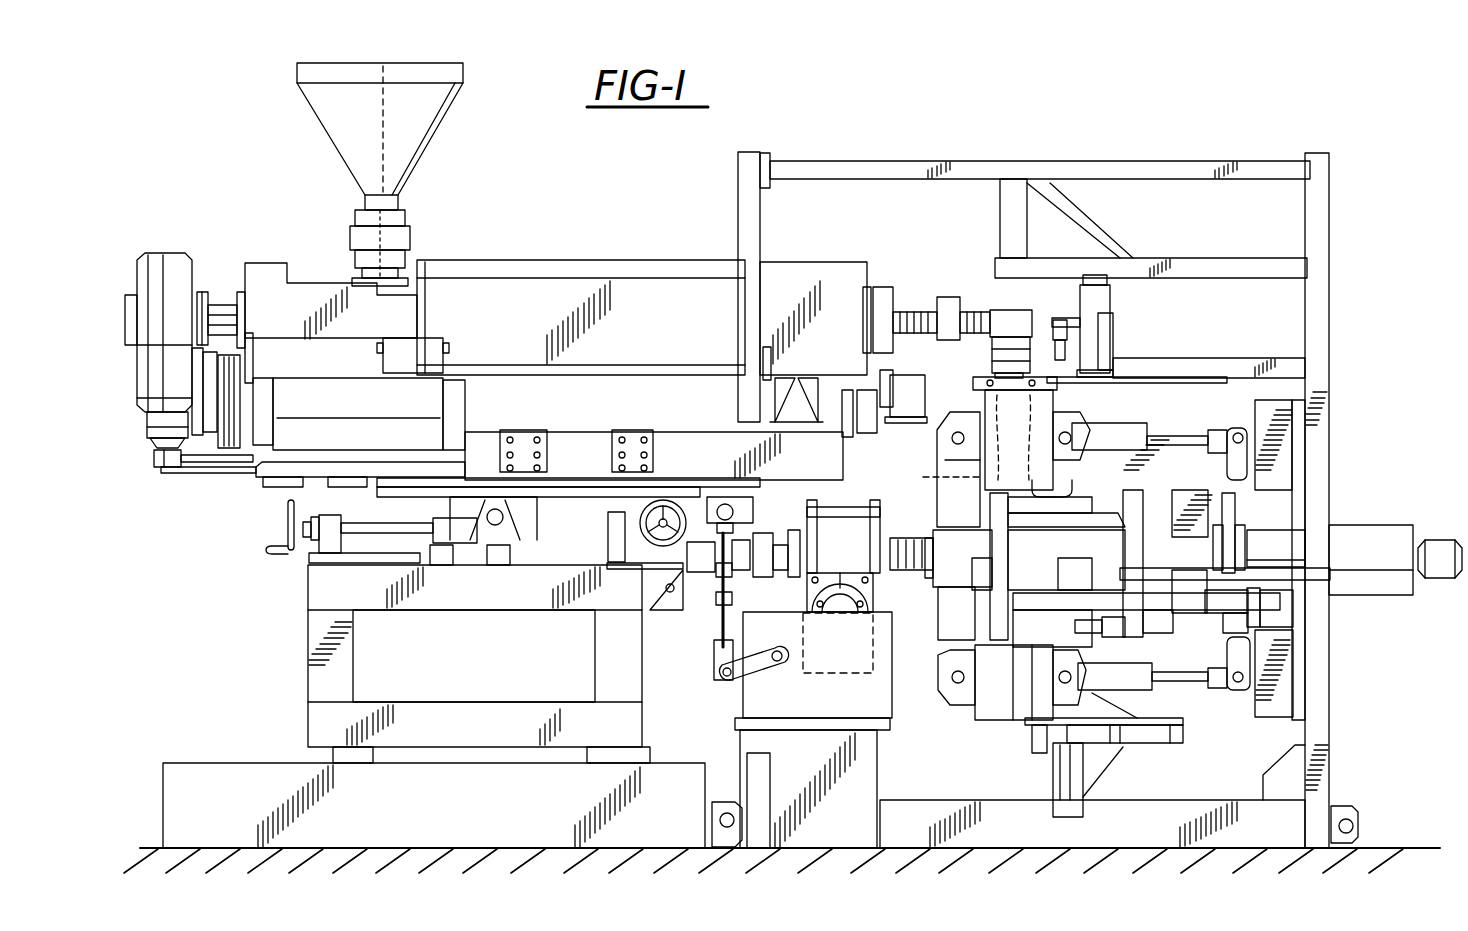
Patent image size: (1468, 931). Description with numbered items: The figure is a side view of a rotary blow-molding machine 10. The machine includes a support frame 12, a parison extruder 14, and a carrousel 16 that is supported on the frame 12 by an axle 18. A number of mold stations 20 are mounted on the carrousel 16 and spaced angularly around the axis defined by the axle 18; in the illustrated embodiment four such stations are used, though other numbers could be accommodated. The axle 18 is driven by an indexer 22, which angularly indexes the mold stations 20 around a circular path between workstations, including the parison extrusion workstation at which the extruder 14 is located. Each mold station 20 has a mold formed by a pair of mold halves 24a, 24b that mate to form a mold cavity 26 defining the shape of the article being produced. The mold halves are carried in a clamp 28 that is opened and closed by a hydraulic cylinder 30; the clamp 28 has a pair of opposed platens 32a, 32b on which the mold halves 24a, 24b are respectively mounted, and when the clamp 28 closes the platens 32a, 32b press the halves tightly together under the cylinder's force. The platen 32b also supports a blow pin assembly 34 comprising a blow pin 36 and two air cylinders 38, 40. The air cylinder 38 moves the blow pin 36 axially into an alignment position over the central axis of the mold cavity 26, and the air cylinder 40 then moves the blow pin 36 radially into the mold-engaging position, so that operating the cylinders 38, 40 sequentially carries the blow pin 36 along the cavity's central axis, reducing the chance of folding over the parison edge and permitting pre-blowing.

The rotary blow-molding machine 10 is at (1310, 142).
The support frame 12 is at (1328, 780).
The parison extruder 14 is at (816, 262).
The carrousel 16 is at (1302, 500).
The axle 18 is at (912, 582).
The mold station 20 is at (966, 396).
The indexer 22 is at (803, 588).
The mold half 24a is at (985, 412).
The mold half 24b is at (1042, 408).
The mold cavity 26 is at (934, 472).
The clamp 28 is at (905, 484).
The hydraulic cylinder 30 is at (1158, 490).
The platen 32a is at (903, 537).
The platen 32b is at (1065, 481).
The blow pin assembly 34 is at (1150, 326).
The blow pin 36 is at (1055, 340).
The air cylinder 38 is at (1160, 361).
The air cylinder 40 is at (1113, 330).